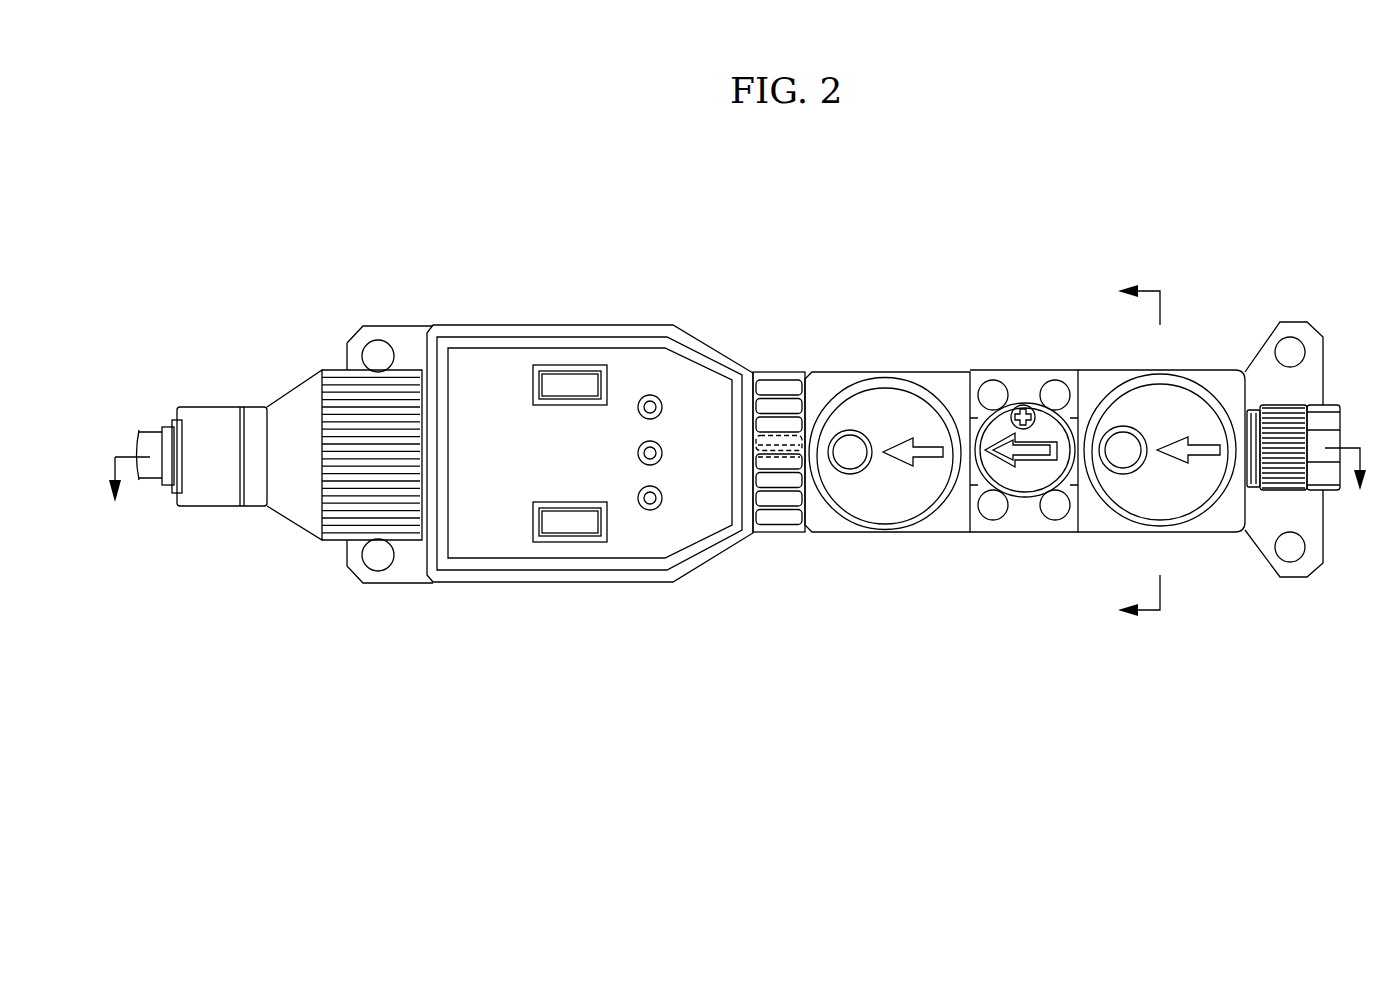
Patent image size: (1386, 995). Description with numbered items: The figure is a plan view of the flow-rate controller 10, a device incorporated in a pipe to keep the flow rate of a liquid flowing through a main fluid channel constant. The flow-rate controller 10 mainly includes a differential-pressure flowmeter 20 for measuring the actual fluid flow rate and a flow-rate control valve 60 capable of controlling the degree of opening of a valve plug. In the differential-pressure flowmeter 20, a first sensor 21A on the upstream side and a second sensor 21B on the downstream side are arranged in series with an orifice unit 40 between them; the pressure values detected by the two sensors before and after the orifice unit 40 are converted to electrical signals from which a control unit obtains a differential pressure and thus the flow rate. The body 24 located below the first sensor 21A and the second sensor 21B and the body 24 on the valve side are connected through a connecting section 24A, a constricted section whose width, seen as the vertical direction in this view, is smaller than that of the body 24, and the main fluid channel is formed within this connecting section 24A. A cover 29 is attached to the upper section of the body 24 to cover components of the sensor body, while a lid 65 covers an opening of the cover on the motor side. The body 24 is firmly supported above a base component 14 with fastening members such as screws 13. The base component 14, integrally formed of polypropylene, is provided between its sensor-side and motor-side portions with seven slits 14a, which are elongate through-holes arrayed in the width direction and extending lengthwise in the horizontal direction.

The flow-rate controller 10 is at (1163, 150).
The flow-rate control valve 60 is at (468, 222).
The differential-pressure flowmeter 20 is at (1052, 308).
The lid 65 is at (638, 365).
The slits 14a is at (773, 387).
The second sensor 21B is at (848, 370).
The orifice unit 40 is at (993, 370).
The body 24 is at (823, 518).
The first sensor 21A is at (1193, 368).
The connecting section 24A is at (762, 465).
The cover 29 is at (890, 498).
The screws 13 is at (408, 572).
The base component 14 is at (1290, 567).